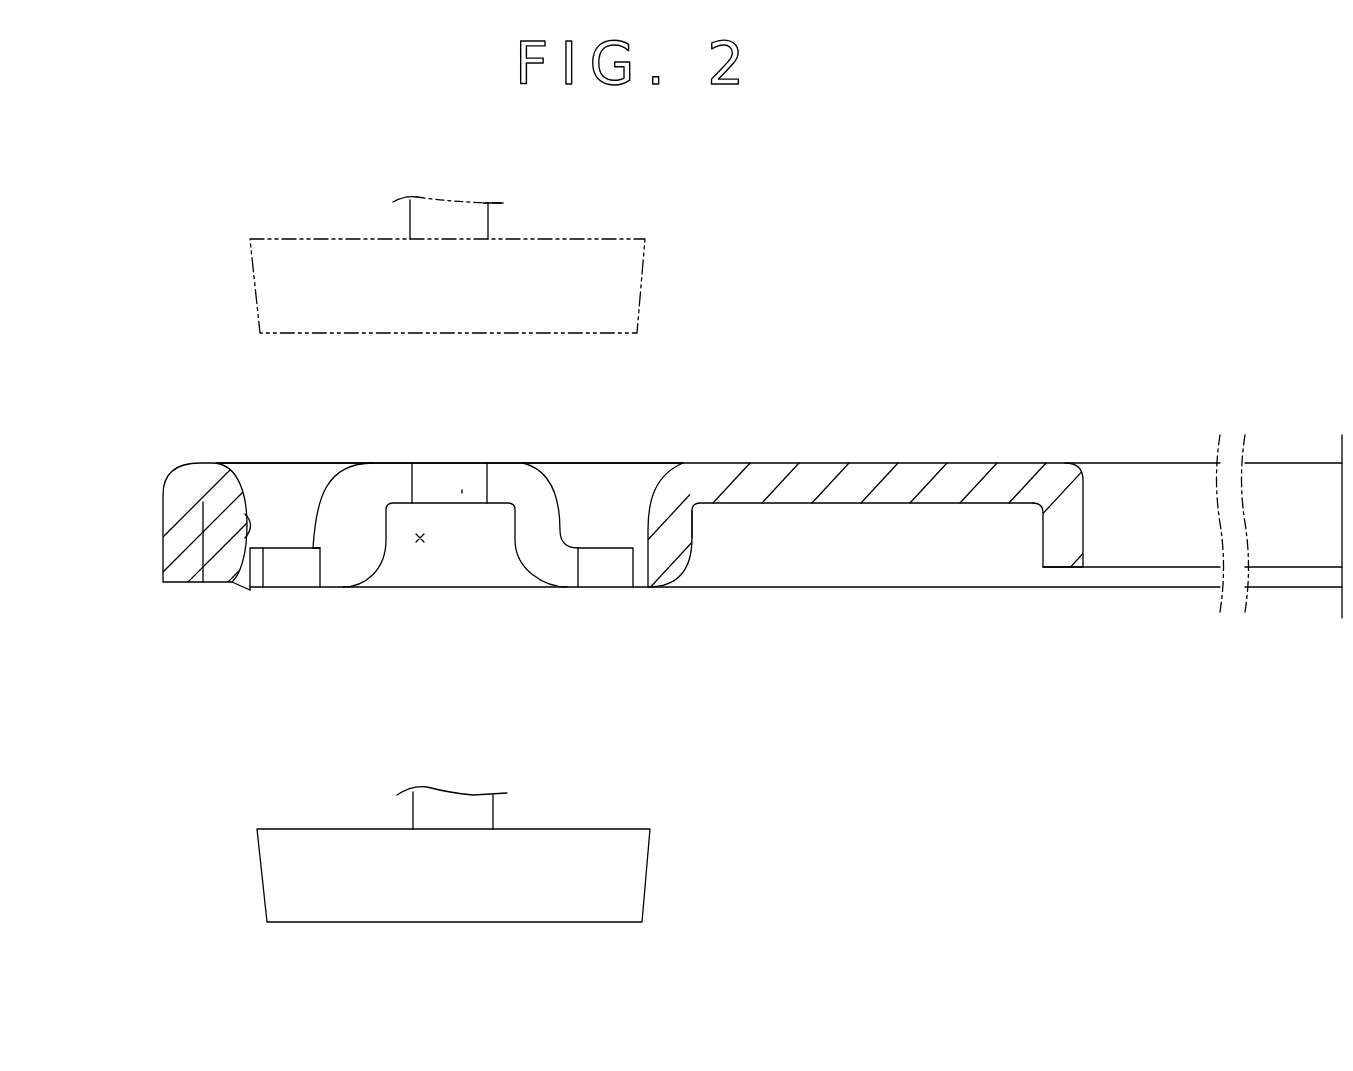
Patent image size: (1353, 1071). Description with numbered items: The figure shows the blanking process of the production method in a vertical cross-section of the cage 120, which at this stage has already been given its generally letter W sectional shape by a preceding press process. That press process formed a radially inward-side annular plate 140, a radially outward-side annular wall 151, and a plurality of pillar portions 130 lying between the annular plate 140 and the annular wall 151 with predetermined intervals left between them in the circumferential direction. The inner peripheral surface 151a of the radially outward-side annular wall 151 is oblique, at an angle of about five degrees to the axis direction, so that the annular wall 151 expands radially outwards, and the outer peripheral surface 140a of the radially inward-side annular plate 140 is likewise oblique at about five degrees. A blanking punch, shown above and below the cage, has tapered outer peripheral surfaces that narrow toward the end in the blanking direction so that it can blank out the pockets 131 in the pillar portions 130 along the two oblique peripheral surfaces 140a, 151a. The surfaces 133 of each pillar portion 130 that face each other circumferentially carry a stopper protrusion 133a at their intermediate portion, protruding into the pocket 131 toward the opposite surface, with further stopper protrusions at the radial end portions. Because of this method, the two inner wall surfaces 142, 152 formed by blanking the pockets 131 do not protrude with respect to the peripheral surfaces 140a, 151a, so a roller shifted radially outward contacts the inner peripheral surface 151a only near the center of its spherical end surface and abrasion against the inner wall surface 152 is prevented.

The cage 120 is at (843, 452).
The pillar portions 130 is at (613, 540).
The pockets 131 is at (420, 545).
The surfaces of pillar portion 133 is at (363, 548).
The stopper protrusion 133a is at (462, 490).
The radially inward-side annular plate 140 is at (957, 492).
The outer peripheral surface 140a is at (648, 524).
The inner wall surface 142 is at (641, 582).
The radially outward-side annular wall 151 is at (223, 520).
The inner peripheral surface 151a is at (247, 527).
The inner wall surface 152 is at (250, 593).